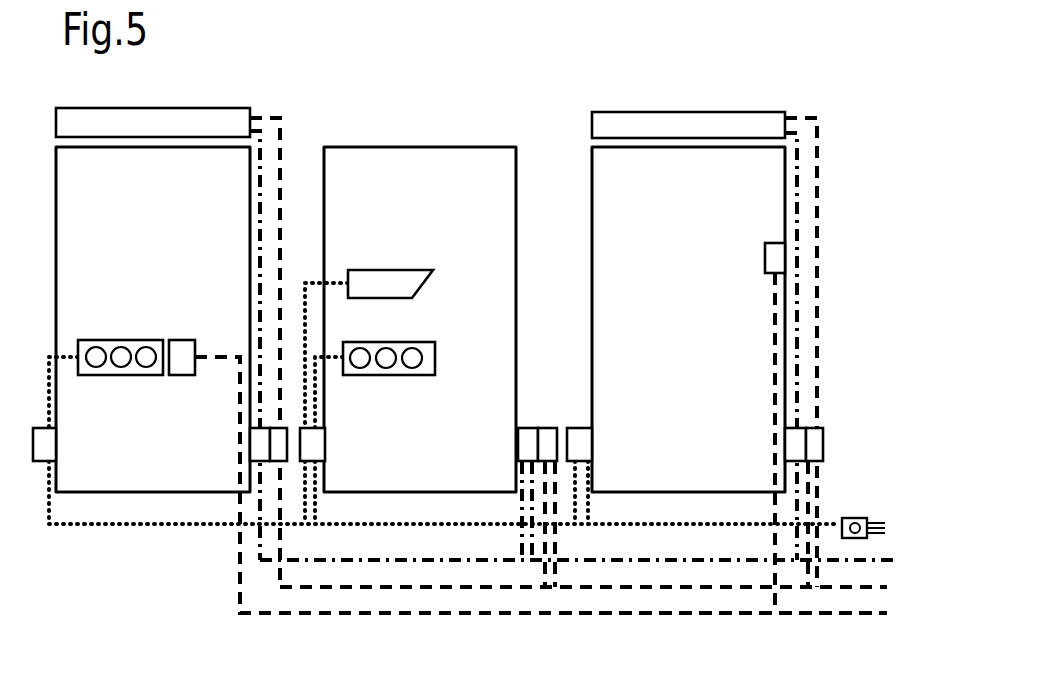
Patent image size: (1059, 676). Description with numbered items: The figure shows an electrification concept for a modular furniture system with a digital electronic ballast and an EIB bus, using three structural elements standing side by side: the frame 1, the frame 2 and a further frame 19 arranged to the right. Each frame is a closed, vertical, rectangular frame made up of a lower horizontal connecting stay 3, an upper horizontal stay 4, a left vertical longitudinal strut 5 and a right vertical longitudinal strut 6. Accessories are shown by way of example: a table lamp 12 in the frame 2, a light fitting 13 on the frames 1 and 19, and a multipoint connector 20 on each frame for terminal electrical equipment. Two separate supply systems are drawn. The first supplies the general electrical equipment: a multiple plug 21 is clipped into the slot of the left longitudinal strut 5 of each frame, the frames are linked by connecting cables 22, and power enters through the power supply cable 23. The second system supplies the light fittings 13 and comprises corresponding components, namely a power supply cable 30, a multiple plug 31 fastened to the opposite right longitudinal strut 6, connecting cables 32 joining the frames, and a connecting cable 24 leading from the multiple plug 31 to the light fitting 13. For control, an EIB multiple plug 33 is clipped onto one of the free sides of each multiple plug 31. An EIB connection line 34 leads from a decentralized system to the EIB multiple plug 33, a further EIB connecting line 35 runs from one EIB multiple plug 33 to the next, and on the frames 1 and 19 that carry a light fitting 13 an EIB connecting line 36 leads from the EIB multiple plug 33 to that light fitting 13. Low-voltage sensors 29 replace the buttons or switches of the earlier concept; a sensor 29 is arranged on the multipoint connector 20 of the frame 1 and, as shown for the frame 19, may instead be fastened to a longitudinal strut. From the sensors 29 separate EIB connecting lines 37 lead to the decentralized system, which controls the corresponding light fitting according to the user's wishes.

The frame 1 is at (185, 103).
The frame 2 is at (418, 116).
The lower horizontal connecting stay 3 is at (130, 490).
The upper horizontal stay 4 is at (120, 148).
The left vertical longitudinal strut 5 is at (57, 199).
The right vertical longitudinal strut 6 is at (249, 204).
The table lamp 12 is at (412, 284).
The light fitting 13 is at (222, 118).
The frame 19 is at (700, 103).
The multipoint connector 20 is at (105, 373).
The multiple plug 21 is at (50, 442).
The connecting cable 22 is at (126, 525).
The power supply cable 23 is at (657, 523).
The connecting cable 24 is at (258, 246).
The sensor 29 is at (180, 340).
The power supply cable 30 is at (897, 557).
The multiple plug 31 is at (256, 438).
The connecting cable 32 is at (453, 558).
The EIB multiple plug 33 is at (276, 447).
The EIB connection line 34 is at (872, 613).
The EIB connecting line 35 is at (493, 585).
The EIB connecting line 36 is at (284, 142).
The EIB connecting line 37 is at (238, 598).